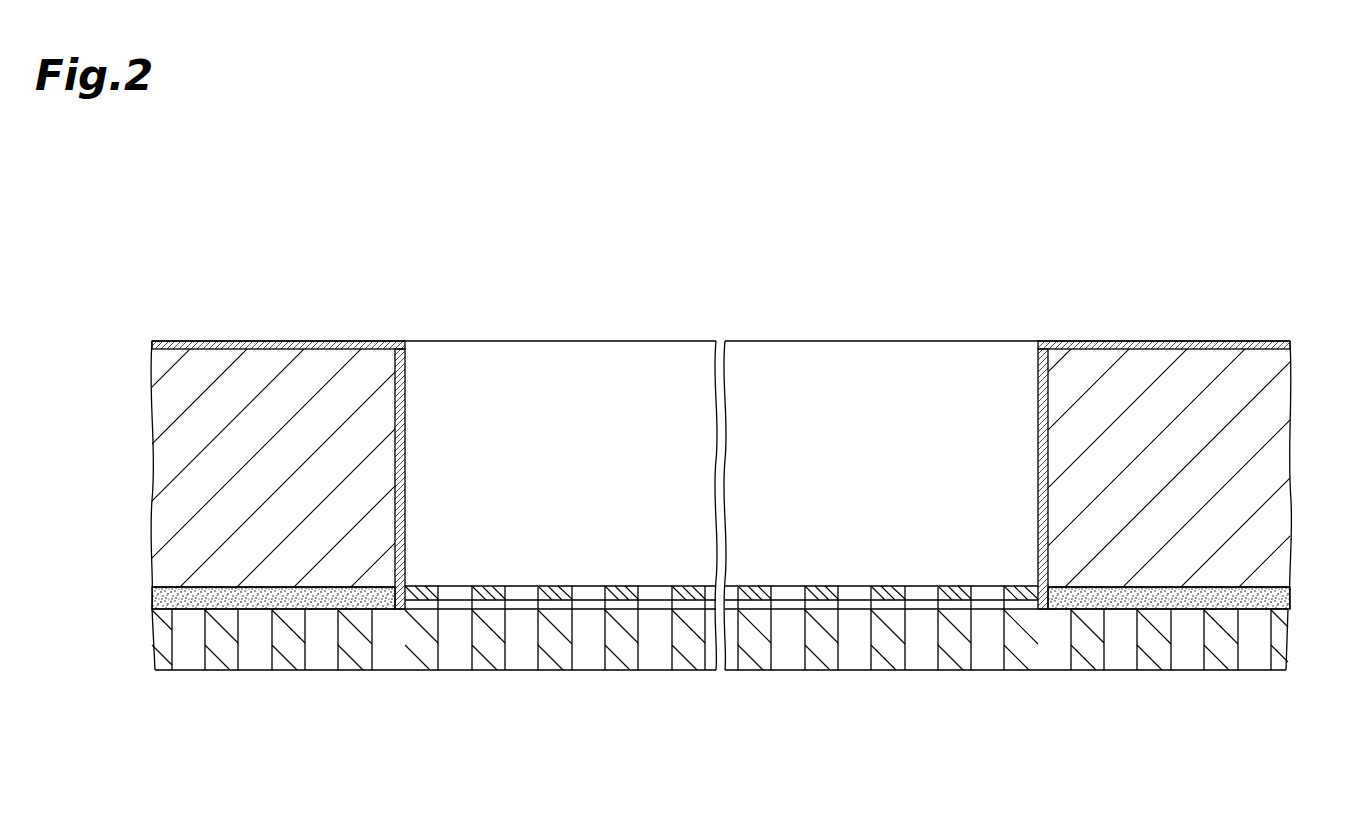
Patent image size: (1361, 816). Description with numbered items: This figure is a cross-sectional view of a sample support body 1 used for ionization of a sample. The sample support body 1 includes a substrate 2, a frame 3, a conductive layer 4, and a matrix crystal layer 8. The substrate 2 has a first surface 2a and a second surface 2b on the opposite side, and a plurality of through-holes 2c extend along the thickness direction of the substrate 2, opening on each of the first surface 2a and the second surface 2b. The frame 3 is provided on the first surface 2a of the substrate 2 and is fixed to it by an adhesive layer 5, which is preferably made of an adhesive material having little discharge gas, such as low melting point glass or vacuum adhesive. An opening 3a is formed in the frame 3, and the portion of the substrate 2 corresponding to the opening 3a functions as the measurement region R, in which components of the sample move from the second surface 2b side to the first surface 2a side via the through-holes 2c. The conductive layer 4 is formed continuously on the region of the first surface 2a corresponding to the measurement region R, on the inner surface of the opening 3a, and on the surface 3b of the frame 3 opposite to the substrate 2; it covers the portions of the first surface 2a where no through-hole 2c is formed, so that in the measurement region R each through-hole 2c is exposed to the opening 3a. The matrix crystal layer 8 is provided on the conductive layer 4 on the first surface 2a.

The sample support body 1 is at (1072, 238).
The substrate 2 is at (1280, 639).
The first surface 2a is at (1292, 594).
The second surface 2b is at (1280, 672).
The through-holes 2c is at (243, 648).
The frame 3 is at (1280, 466).
The opening 3a is at (405, 412).
The surface 3b is at (1258, 341).
The conductive layer 4 is at (560, 586).
The adhesive layer 5 is at (152, 599).
The matrix crystal layer 8 is at (888, 586).
The measurement region R is at (791, 578).